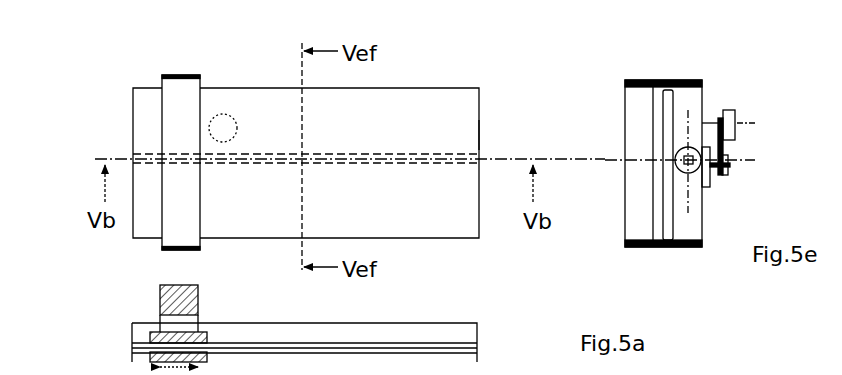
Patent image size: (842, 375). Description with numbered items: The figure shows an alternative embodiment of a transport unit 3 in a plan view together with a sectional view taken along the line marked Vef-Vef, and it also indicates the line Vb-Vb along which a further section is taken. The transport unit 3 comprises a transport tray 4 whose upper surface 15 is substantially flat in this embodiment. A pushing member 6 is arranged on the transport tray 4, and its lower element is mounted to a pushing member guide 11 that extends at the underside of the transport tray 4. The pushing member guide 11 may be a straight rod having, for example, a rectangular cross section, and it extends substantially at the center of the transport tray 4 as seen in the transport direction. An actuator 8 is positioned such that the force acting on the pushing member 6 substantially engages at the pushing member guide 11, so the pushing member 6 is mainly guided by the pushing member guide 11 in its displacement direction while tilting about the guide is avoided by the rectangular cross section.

The transport unit 3 is at (481, 100).
The transport tray 4 is at (467, 139).
The pushing member 6 is at (165, 108).
The actuator 8 is at (208, 128).
The pushing member guide 11 is at (480, 345).
The upper surface 15 is at (453, 323).